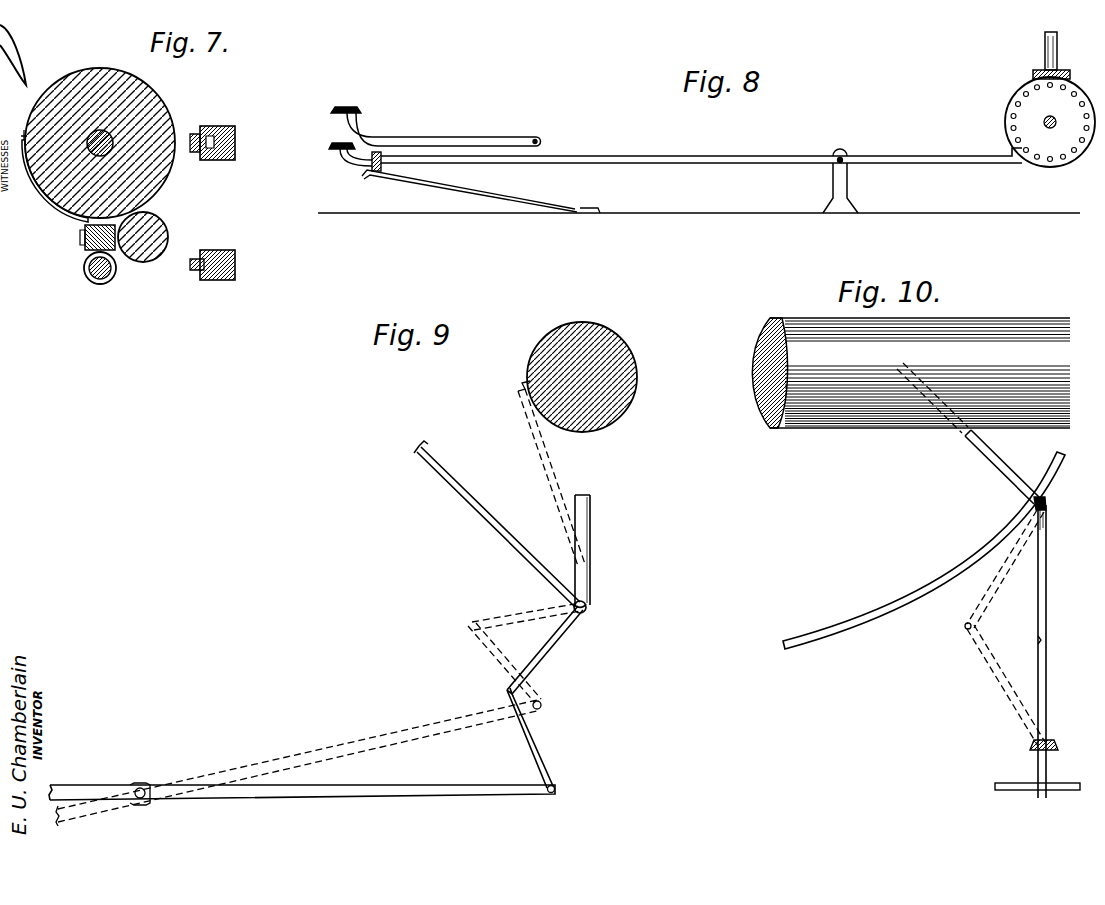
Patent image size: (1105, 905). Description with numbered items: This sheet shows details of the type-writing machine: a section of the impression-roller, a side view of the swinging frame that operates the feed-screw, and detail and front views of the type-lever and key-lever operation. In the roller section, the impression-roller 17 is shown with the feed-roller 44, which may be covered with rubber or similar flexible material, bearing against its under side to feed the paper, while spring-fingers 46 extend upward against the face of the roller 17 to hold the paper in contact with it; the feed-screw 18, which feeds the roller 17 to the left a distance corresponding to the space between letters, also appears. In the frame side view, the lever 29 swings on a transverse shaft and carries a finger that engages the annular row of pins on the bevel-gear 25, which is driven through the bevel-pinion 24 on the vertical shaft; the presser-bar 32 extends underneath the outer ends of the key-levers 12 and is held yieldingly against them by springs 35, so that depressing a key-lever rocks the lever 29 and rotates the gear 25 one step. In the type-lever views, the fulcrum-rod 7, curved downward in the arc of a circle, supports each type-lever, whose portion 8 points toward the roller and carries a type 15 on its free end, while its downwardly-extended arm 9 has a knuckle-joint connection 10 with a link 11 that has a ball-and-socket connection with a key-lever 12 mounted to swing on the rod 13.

In FIG. 9, the fulcrum-rod 7 is at (591, 550).
In FIG. 10, the fulcrum-rod 7 is at (909, 620).
In FIG. 9, the portion of type-lever 8 is at (485, 518).
In FIG. 10, the portion of type-lever 8 is at (997, 464).
In FIG. 9, the downwardly-extended arm 9 is at (569, 638).
In FIG. 10, the downwardly-extended arm 9 is at (1047, 606).
In FIG. 9, the knuckle-joint connection 10 is at (506, 692).
In FIG. 10, the knuckle-joint connection 10 is at (1047, 645).
In FIG. 9, the link 11 is at (538, 750).
In FIG. 10, the link 11 is at (1047, 706).
In FIG. 9, the key-lever 12 is at (422, 790).
In FIG. 9, the rod 13 is at (146, 789).
In FIG. 9, the type 15 is at (428, 452).
In FIG. 7, the impression-roller 17 is at (163, 118).
In FIG. 10, the impression-roller 17 is at (911, 360).
In FIG. 7, the feed-screw 18 is at (86, 275).
In FIG. 8, the bevel-pinion 24 is at (1034, 76).
In FIG. 8, the bevel-gear 25 is at (1006, 118).
In FIG. 8, the lever 29 is at (764, 158).
In FIG. 8, the presser-bar 32 is at (369, 177).
In FIG. 8, the springs 35 is at (481, 191).
In FIG. 7, the feed-roller 44 is at (164, 224).
In FIG. 7, the spring-fingers 46 is at (58, 214).